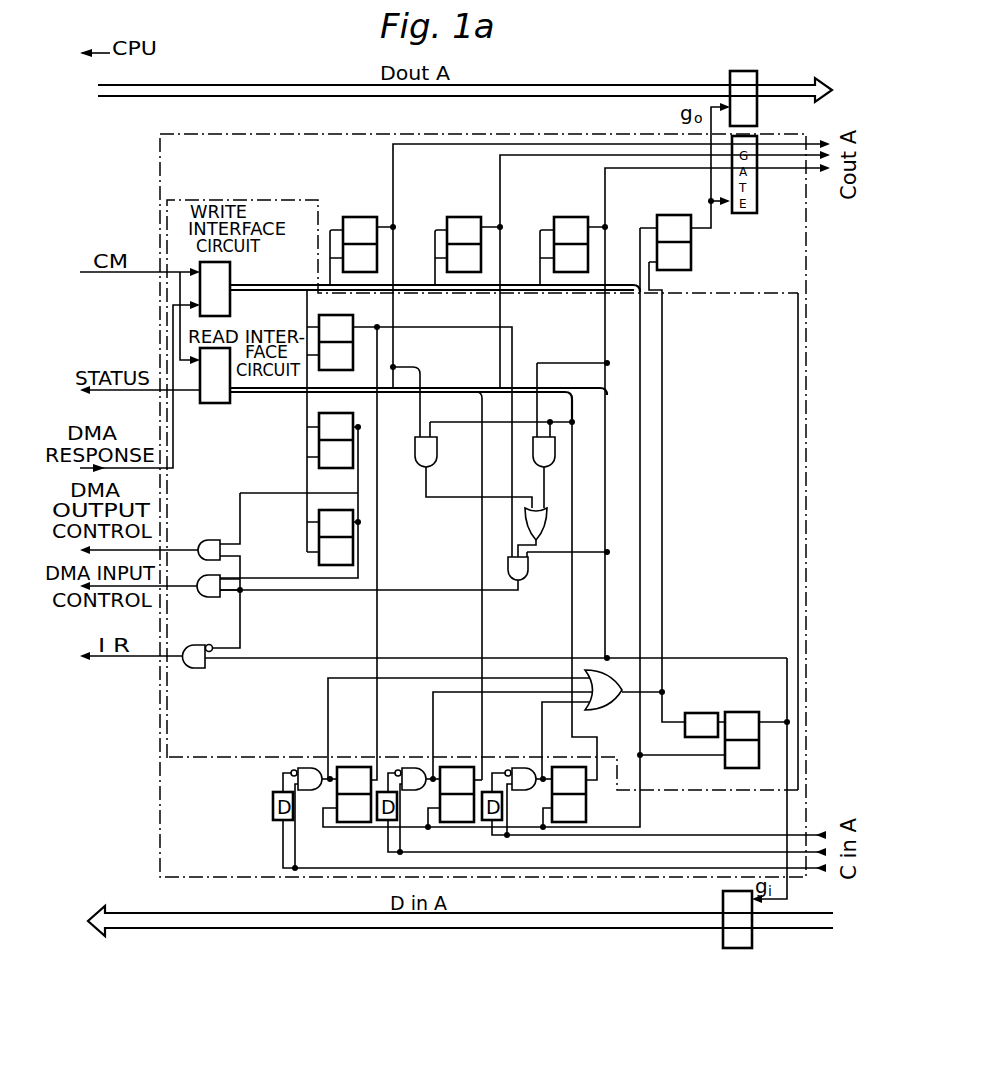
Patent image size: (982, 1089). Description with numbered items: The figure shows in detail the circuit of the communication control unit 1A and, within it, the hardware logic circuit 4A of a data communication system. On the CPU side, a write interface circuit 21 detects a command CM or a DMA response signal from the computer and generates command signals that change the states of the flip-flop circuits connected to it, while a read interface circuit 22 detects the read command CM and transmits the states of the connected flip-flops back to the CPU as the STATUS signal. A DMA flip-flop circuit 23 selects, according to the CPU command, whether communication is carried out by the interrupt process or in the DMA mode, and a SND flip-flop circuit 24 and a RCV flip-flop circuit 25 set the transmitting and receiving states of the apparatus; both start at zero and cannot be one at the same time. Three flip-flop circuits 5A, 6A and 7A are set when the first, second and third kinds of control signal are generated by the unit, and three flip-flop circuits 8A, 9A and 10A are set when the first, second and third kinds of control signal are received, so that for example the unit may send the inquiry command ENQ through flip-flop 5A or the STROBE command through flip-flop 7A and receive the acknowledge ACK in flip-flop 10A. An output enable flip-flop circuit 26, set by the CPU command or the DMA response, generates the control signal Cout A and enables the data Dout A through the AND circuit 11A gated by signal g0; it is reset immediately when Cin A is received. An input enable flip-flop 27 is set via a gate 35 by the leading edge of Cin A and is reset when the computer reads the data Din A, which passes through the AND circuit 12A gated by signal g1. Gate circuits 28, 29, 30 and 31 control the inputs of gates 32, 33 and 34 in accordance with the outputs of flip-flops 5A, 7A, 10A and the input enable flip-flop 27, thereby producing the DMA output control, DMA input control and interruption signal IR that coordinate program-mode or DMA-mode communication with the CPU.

The communication control unit 1A is at (814, 279).
The hardware logic circuit 4A is at (798, 312).
The flip-flop circuit 5A is at (353, 238).
The flip-flop circuit 6A is at (458, 238).
The flip-flop circuit 7A is at (564, 238).
The flip-flop circuit 8A is at (331, 780).
The flip-flop circuit 9A is at (434, 780).
The flip-flop circuit 10A is at (545, 780).
The AND circuit 11A is at (746, 84).
The AND circuit 12A is at (737, 948).
The write interface circuit 21 is at (230, 300).
The read interface circuit 22 is at (220, 403).
The DMA flip-flop circuit 23 is at (353, 320).
The SND flip-flop circuit 24 is at (353, 457).
The RCV flip-flop circuit 25 is at (353, 552).
The output enable flip-flop circuit 26 is at (691, 262).
The input enable flip-flop 27 is at (725, 768).
The gate circuit 28 is at (437, 445).
The gate circuit 29 is at (555, 452).
The gate circuit 30 is at (547, 518).
The gate circuit 31 is at (528, 570).
The gate 32 is at (205, 540).
The gate 33 is at (208, 597).
The gate 34 is at (196, 668).
The gate 35 is at (600, 710).